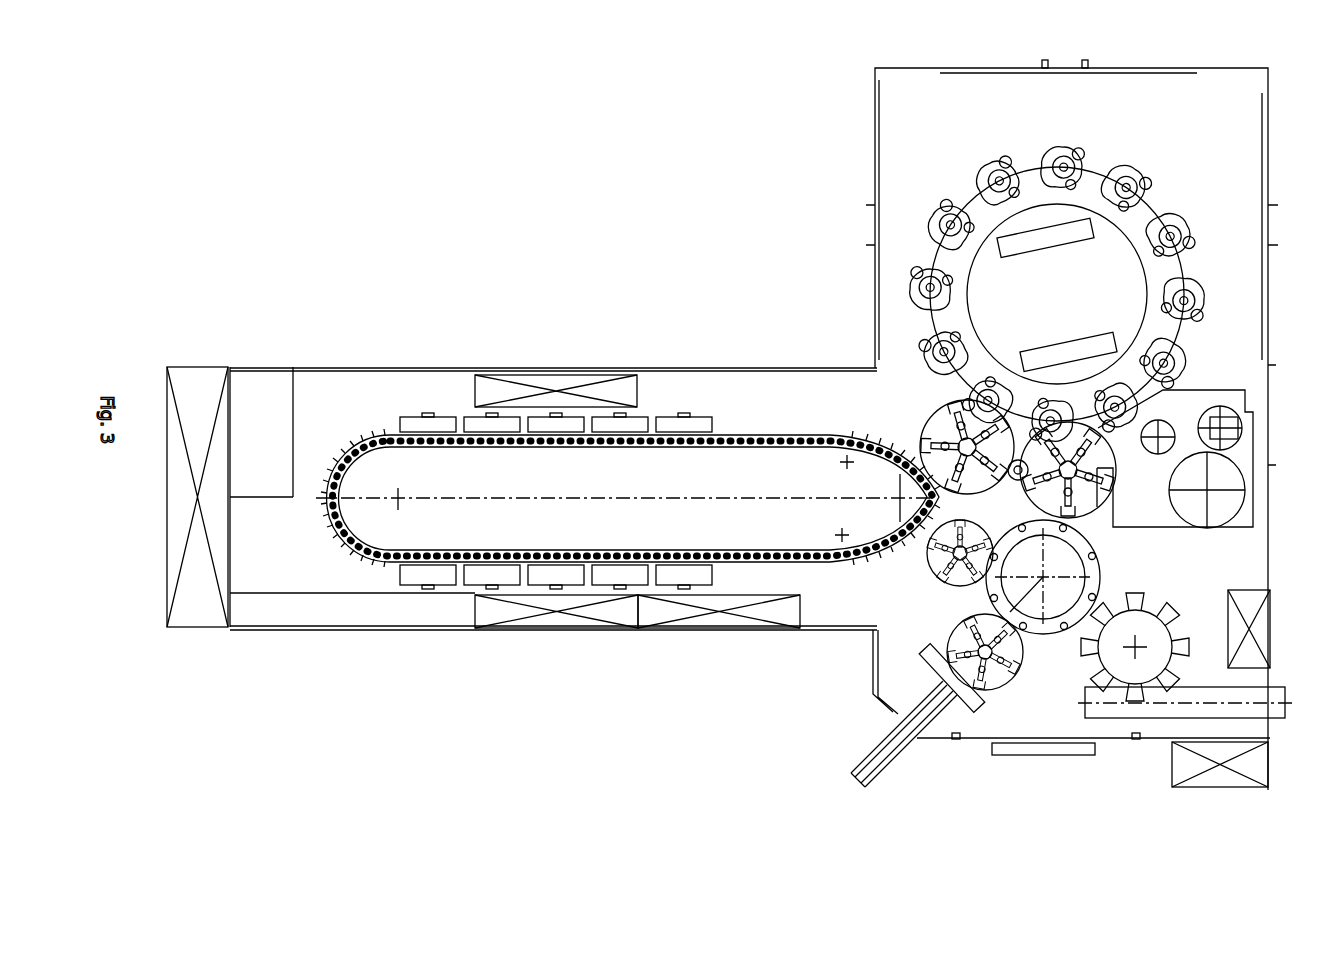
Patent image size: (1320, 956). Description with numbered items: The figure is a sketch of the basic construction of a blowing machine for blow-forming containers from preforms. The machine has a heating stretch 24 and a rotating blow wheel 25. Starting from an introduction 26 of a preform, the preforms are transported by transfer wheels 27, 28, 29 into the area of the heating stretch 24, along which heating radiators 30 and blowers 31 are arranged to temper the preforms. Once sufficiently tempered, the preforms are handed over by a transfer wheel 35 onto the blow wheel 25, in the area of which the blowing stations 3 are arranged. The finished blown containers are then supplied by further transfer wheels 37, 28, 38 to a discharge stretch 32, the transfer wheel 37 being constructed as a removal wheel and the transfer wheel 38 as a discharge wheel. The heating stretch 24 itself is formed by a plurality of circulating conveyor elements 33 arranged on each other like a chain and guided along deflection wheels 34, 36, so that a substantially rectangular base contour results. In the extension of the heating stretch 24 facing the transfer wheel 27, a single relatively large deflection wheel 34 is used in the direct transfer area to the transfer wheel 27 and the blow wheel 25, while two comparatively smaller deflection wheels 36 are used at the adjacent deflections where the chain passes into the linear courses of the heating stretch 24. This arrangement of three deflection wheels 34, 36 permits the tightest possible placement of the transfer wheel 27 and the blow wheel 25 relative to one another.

The blowing station 3 is at (917, 273).
The heating stretch 24 is at (673, 400).
The blow wheel 25 is at (1000, 223).
The introduction 26 is at (910, 743).
The transfer wheel 27 is at (995, 690).
The transfer wheel 28 is at (1045, 633).
The transfer wheel 29 is at (870, 665).
The heating radiators 30 is at (443, 420).
The blowers 31 is at (552, 382).
The discharge stretch 32 is at (1275, 712).
The circulating conveyor elements 33 is at (373, 557).
The deflection wheel 34 is at (398, 495).
The transfer wheel 35 is at (950, 410).
The deflection wheels 36 is at (847, 462).
The transfer wheel 37 is at (1113, 497).
The transfer wheel 38 is at (1147, 658).